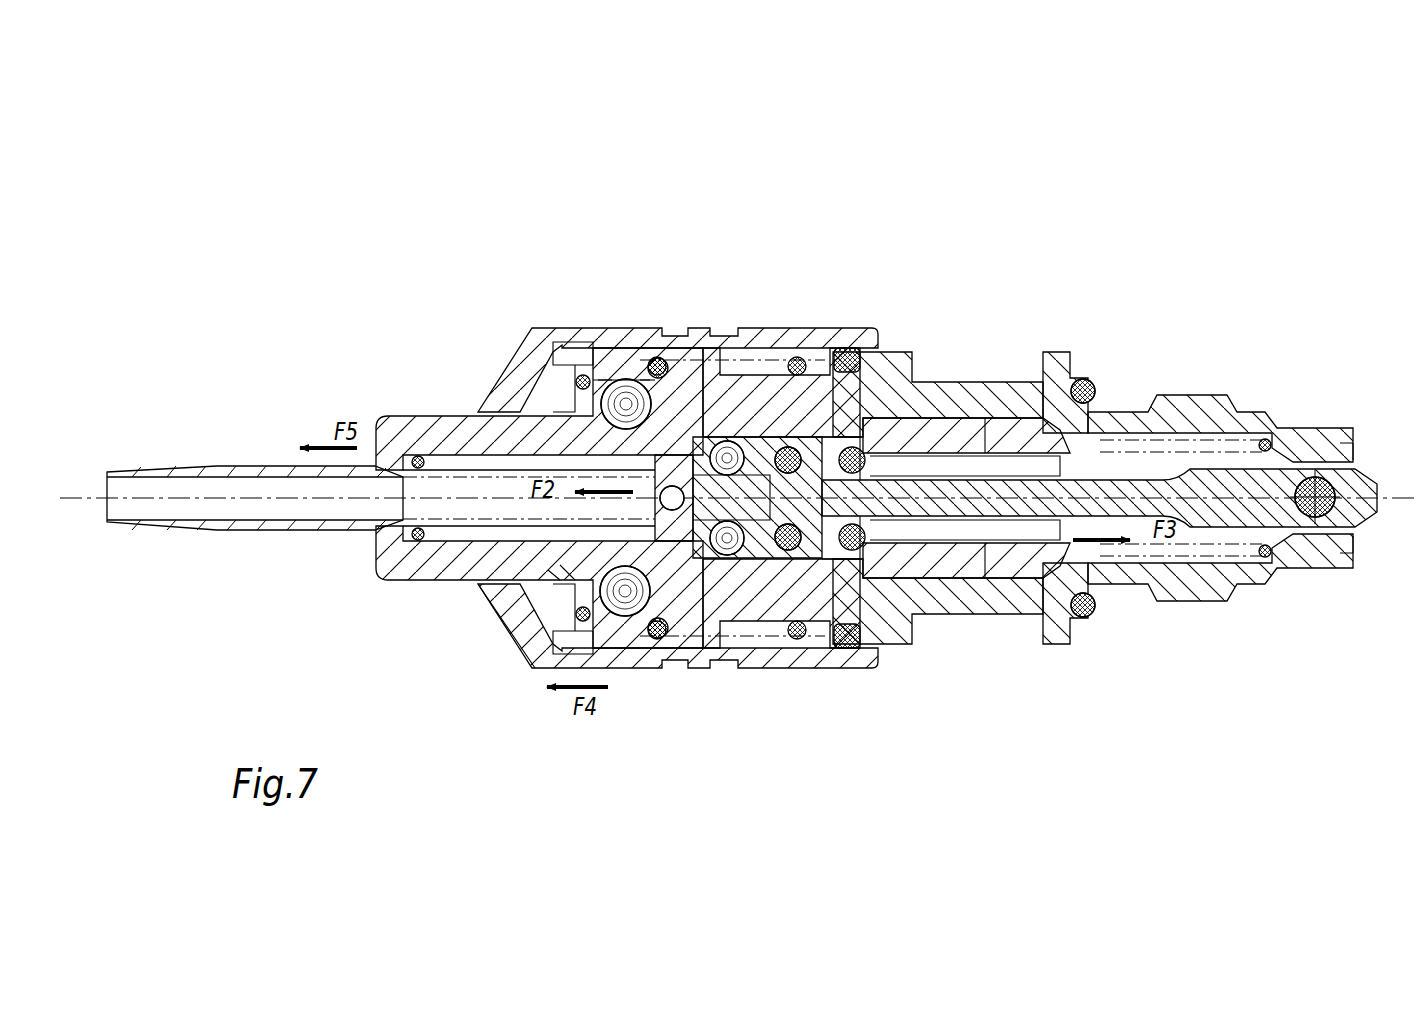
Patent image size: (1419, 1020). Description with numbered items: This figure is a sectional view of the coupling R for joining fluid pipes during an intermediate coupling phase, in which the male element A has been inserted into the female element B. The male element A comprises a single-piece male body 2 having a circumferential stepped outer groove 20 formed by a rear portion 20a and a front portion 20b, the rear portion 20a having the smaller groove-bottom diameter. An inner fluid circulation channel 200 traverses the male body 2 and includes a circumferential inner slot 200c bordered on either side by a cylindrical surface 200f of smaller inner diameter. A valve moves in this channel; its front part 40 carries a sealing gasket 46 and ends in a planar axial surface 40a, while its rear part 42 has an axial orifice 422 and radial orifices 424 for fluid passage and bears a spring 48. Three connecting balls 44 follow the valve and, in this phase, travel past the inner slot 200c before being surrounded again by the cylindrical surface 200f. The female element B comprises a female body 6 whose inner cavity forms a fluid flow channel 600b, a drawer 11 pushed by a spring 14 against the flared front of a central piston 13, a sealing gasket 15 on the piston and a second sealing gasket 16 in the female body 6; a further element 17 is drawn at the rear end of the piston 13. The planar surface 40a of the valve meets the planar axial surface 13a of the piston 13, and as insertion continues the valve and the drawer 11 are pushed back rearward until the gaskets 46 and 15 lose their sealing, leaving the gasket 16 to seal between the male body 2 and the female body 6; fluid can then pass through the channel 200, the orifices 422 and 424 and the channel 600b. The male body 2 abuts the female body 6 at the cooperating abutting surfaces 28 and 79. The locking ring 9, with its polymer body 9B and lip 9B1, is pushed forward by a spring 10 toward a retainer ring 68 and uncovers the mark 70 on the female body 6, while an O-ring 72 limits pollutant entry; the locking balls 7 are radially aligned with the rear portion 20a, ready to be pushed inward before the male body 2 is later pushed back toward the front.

The male body 2 is at (400, 433).
The female body 6 is at (1192, 422).
The locking balls 7 is at (626, 378).
The locking ring 9 is at (753, 340).
The polymer body 9B is at (570, 342).
The lip 9B1 is at (525, 378).
The spring 10 is at (800, 350).
The drawer 11 is at (1018, 432).
The central piston 13 is at (1030, 600).
The planar axial surface 13a is at (727, 556).
The spring 14 is at (1180, 564).
The sealing gasket 15 is at (920, 565).
The second sealing gasket 16 is at (936, 420).
The ball 17 is at (1328, 485).
The circumferential stepped outer groove 20 is at (605, 222).
The rear portion 20a is at (638, 358).
The front portion 20b is at (641, 358).
The abutting surface 28 is at (849, 348).
The front part 40 is at (652, 638).
The planar axial surface 40a is at (958, 565).
The rear part 42 is at (482, 535).
The connecting balls 44 is at (692, 540).
The sealing gasket 46 is at (750, 565).
The spring 48 is at (405, 474).
The retainer ring 68 is at (585, 605).
The mark 70 is at (889, 348).
The O-ring 72 is at (858, 652).
The abutting surface 79 is at (722, 441).
The inner fluid circulation channel 200 is at (462, 520).
The circumferential inner slot 200c is at (945, 565).
The cylindrical surface 200f is at (795, 560).
The axial orifice 422 is at (632, 487).
The radial orifices 424 is at (578, 563).
The fluid flow channel 600b is at (1137, 468).
The male element A is at (262, 432).
The female element B is at (1230, 345).
The coupling R is at (916, 165).